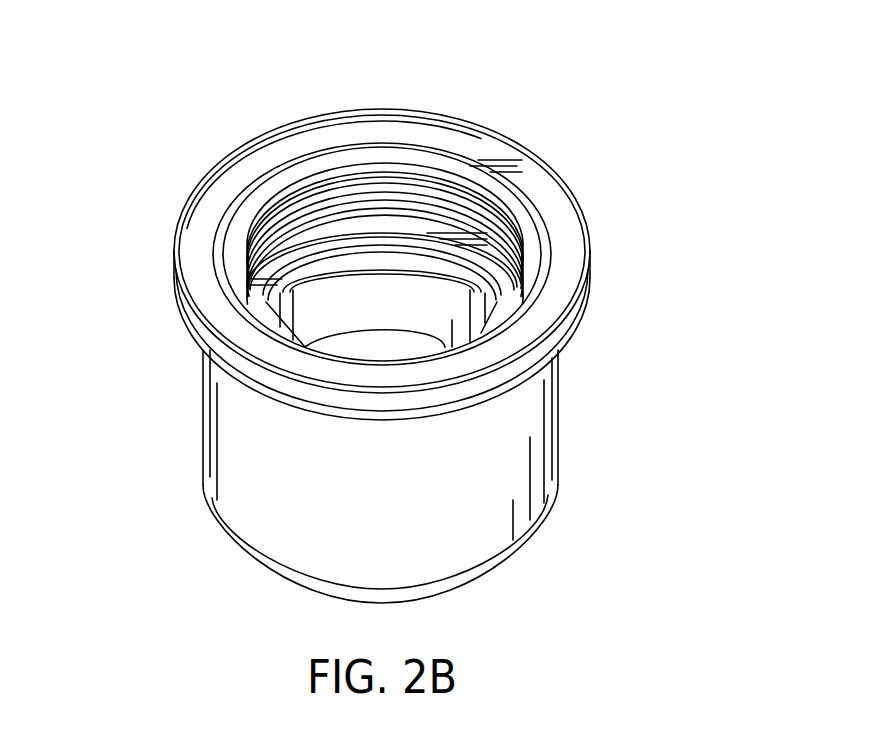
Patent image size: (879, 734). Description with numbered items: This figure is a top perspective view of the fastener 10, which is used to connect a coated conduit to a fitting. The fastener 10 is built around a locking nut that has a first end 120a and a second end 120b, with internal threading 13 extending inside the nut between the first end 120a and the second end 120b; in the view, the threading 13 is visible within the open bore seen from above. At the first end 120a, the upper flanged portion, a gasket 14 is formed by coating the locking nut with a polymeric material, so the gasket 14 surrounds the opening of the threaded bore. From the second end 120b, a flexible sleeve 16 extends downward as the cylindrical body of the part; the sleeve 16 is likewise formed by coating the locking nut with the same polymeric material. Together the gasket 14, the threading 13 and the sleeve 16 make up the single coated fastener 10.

The fastener 10 is at (624, 132).
The internal threading 13 is at (293, 205).
The gasket 14 is at (238, 265).
The flexible sleeve 16 is at (203, 390).
The first end 120a is at (587, 277).
The second end 120b is at (530, 382).